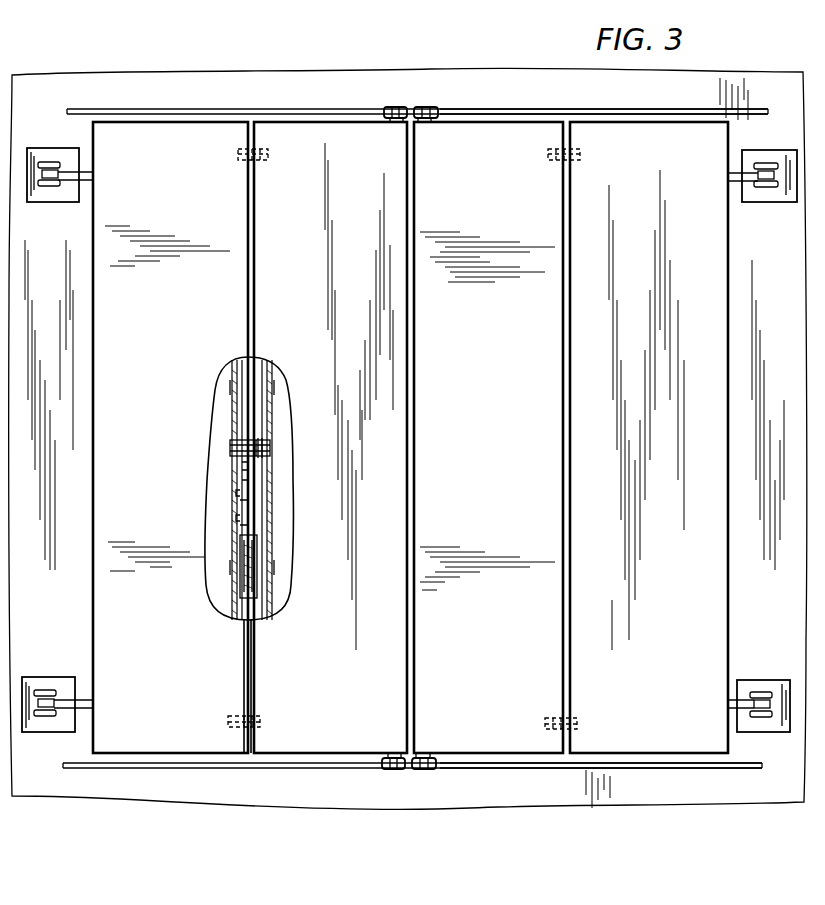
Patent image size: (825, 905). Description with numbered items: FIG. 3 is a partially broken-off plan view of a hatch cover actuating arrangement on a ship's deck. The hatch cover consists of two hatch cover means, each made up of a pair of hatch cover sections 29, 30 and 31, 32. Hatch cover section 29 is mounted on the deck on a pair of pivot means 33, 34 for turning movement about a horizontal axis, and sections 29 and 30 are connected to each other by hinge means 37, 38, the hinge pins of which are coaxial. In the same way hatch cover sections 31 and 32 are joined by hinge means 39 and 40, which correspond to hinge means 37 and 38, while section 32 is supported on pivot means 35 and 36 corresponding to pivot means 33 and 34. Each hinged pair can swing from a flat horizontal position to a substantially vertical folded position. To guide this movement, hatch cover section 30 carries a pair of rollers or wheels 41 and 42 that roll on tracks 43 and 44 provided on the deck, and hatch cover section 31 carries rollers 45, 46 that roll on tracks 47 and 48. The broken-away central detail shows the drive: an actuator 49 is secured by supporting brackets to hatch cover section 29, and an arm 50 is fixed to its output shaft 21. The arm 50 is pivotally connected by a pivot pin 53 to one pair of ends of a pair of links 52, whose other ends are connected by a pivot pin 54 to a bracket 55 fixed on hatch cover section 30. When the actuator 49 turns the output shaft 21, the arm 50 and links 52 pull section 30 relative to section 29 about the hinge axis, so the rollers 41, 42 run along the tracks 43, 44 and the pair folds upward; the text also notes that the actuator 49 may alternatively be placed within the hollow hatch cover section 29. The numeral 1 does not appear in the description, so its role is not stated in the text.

The lock 1 is at (254, 566).
The output shaft 21 is at (256, 466).
The hatch cover section 29 is at (152, 133).
The hatch cover section 30 is at (284, 132).
The hatch cover section 31 is at (505, 133).
The hatch cover section 32 is at (660, 135).
The pivot means 33 is at (60, 200).
The pivot means 34 is at (38, 682).
The pivot means 35 is at (780, 200).
The pivot means 36 is at (748, 684).
The hinge means 37 is at (236, 154).
The hinge means 38 is at (266, 722).
The hinge means 39 is at (584, 154).
The hinge means 40 is at (582, 724).
The roller 41 is at (390, 108).
The roller 42 is at (392, 770).
The track 43 is at (305, 112).
The track 44 is at (302, 768).
The roller 45 is at (430, 108).
The roller 46 is at (426, 770).
The track 47 is at (468, 113).
The track 48 is at (482, 768).
The actuator 49 is at (254, 522).
The arm 50 is at (232, 448).
The links 52 is at (237, 428).
The pivot pin 53 is at (228, 432).
The pivot pin 54 is at (272, 438).
The bracket 55 is at (270, 448).